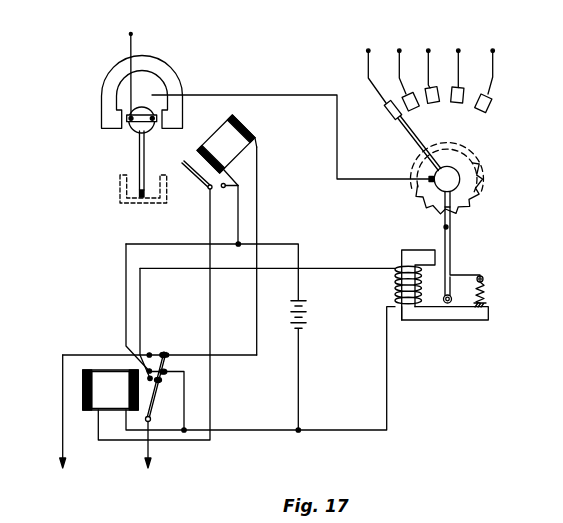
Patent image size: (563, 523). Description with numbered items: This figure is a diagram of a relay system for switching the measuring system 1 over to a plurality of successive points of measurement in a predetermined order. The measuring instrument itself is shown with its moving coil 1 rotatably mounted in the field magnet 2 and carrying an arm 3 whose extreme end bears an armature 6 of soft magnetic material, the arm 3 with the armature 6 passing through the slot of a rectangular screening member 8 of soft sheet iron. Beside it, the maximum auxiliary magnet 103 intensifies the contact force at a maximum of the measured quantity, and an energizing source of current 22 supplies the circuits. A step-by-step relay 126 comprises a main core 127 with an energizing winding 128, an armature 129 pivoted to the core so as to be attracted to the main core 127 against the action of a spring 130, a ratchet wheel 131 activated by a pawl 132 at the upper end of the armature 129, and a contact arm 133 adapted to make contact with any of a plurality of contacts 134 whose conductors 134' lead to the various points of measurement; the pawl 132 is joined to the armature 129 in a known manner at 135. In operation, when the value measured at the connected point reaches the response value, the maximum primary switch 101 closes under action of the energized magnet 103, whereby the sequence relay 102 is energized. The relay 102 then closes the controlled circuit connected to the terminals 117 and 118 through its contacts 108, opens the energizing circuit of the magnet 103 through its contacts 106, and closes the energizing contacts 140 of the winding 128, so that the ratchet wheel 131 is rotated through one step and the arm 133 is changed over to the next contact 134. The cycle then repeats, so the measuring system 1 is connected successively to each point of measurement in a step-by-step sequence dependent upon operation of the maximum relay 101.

The moving coil 1 is at (130, 125).
The field magnet 2 is at (172, 78).
The arm 3 is at (140, 152).
The armature 6 is at (140, 198).
The screening member 8 is at (157, 203).
The energizing source of current 22 is at (310, 315).
The maximum primary switch 101 is at (192, 159).
The sequence relay 102 is at (82, 391).
The maximum auxiliary magnet 103 is at (252, 137).
The contacts 106 is at (165, 355).
The contacts 108 is at (153, 348).
The terminal 117 is at (66, 448).
The terminal 118 is at (152, 450).
The step-by-step relay 126 is at (435, 293).
The main core 127 is at (407, 250).
The energizing winding 128 is at (405, 293).
The armature 129 is at (452, 253).
The spring 130 is at (482, 293).
The ratchet wheel 131 is at (475, 198).
The pawl 132 is at (450, 218).
The contact arm 133 is at (412, 135).
The contacts 134 is at (471, 102).
The conductor 134' is at (431, 54).
The pawl joint 135 is at (447, 227).
The energizing contacts 140 is at (160, 373).